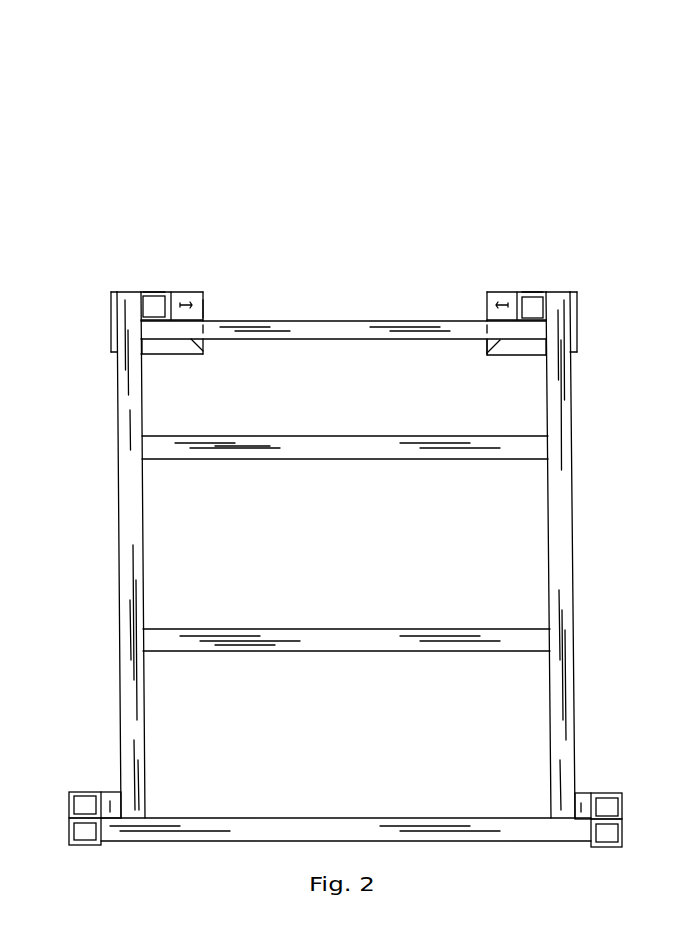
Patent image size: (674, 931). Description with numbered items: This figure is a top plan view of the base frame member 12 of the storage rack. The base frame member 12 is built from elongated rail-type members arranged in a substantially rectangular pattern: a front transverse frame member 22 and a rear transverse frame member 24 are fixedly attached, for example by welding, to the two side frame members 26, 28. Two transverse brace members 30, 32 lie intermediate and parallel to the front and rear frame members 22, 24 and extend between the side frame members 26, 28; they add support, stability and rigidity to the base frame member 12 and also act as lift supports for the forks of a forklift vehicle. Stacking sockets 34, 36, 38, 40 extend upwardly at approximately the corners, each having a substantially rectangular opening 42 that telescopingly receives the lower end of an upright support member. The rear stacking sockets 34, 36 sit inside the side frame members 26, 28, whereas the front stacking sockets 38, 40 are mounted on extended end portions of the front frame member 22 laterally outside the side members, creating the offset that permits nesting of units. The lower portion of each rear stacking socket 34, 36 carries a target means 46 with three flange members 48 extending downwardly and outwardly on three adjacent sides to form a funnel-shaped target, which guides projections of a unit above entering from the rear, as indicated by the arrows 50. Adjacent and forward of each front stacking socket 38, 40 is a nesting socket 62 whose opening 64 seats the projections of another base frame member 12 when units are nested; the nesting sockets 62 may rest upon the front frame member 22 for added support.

The base frame member 12 is at (333, 284).
The front transverse frame member 22 is at (300, 818).
The rear transverse frame member 24 is at (290, 321).
The side frame member 26 is at (117, 527).
The side frame member 28 is at (546, 527).
The transverse brace member 30 is at (300, 629).
The transverse brace member 32 is at (272, 436).
The rear stacking socket 34 is at (148, 292).
The rear stacking socket 36 is at (527, 292).
The front stacking socket 38 is at (69, 804).
The front stacking socket 40 is at (622, 803).
The opening 42 is at (160, 303).
The target means 46 is at (204, 310).
The flange member 48 is at (111, 322).
The arrows 50 is at (153, 290).
The nesting socket 62 is at (69, 838).
The opening 64 is at (85, 833).